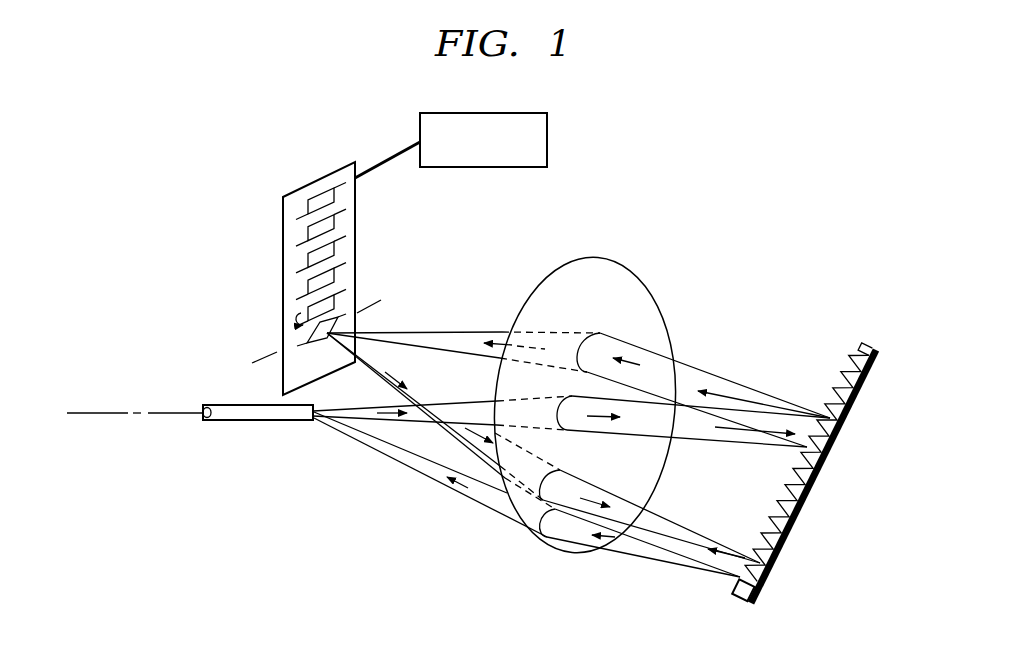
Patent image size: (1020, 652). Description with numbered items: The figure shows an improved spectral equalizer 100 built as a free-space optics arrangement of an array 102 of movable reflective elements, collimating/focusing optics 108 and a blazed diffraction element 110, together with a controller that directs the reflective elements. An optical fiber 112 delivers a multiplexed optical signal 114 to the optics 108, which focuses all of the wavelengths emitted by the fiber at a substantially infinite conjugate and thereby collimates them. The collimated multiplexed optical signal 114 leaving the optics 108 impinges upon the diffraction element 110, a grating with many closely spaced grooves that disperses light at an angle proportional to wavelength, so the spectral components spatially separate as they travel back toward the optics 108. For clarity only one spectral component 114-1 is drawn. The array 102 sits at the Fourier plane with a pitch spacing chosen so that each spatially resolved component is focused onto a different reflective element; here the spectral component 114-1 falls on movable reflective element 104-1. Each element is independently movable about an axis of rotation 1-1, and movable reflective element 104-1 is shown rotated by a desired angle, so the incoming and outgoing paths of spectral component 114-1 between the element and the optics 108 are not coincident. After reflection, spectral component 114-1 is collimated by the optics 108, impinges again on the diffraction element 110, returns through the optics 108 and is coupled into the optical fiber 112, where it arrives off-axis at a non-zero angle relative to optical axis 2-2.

The spectral equalizer 100 is at (758, 171).
The array of movable reflective elements 102 is at (318, 178).
The movable reflective element 104-1 is at (317, 341).
The collimating/focusing optics 108 is at (630, 267).
The diffraction element 110 is at (834, 456).
The optical fiber 112 is at (255, 425).
The multiplexed optical signal 114 is at (387, 420).
The spectral component 114-1 is at (500, 322).
The axis of rotation 1 is at (253, 362).
The optical axis 2 is at (94, 411).